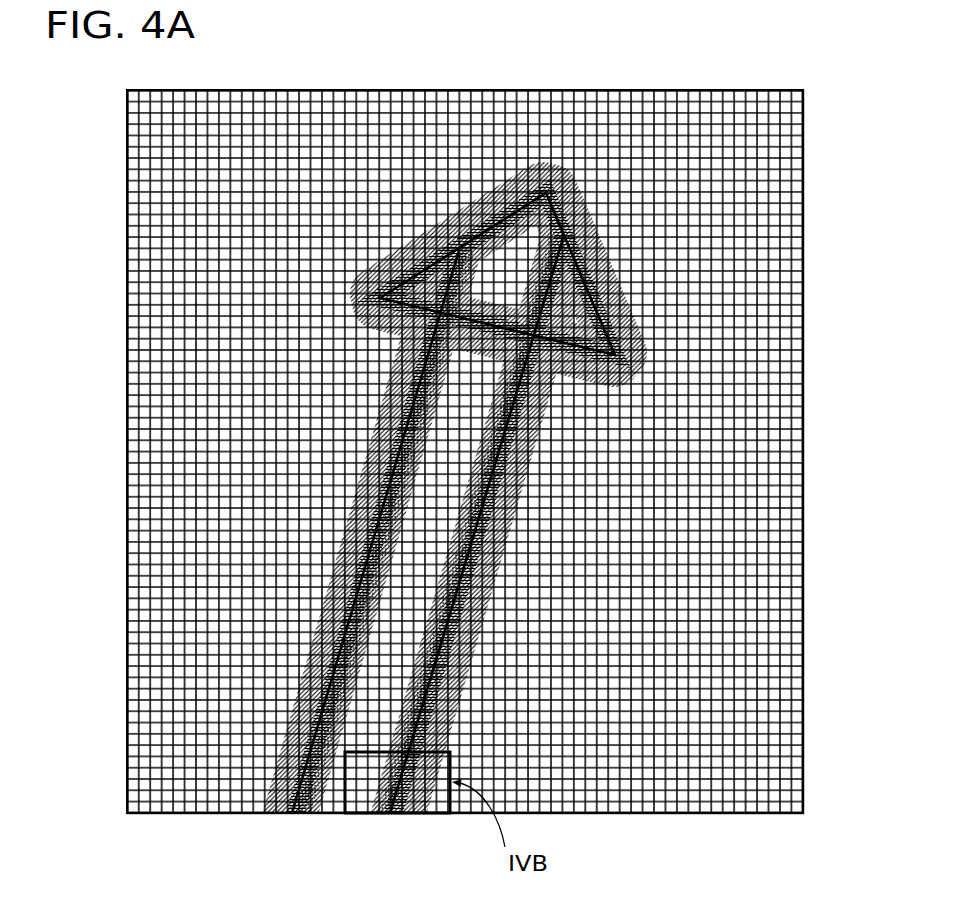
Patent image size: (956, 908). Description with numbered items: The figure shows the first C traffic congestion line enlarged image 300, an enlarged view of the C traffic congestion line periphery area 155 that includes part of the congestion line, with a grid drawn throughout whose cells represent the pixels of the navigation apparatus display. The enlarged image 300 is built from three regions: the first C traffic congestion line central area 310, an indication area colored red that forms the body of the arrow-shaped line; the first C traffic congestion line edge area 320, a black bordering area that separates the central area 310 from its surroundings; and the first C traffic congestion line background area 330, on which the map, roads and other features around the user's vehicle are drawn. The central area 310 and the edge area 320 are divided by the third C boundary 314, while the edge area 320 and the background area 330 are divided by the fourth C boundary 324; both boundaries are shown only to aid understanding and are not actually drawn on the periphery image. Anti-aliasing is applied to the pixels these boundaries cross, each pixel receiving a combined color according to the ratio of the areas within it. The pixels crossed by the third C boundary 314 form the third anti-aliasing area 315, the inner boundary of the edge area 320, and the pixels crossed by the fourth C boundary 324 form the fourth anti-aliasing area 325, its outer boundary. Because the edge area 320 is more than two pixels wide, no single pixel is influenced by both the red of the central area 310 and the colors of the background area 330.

The first C traffic congestion line enlarged image 300 is at (490, 90).
The first C traffic congestion line background area 330 is at (200, 257).
The C traffic congestion line periphery area 155 is at (460, 533).
The fourth anti-aliasing area 325 is at (395, 430).
The first C traffic congestion line edge area 320 is at (385, 490).
The third anti-aliasing area 315 is at (398, 722).
The first C traffic congestion line central area 310 is at (398, 637).
The fourth C boundary 324 is at (268, 815).
The third C boundary 314 is at (373, 815).